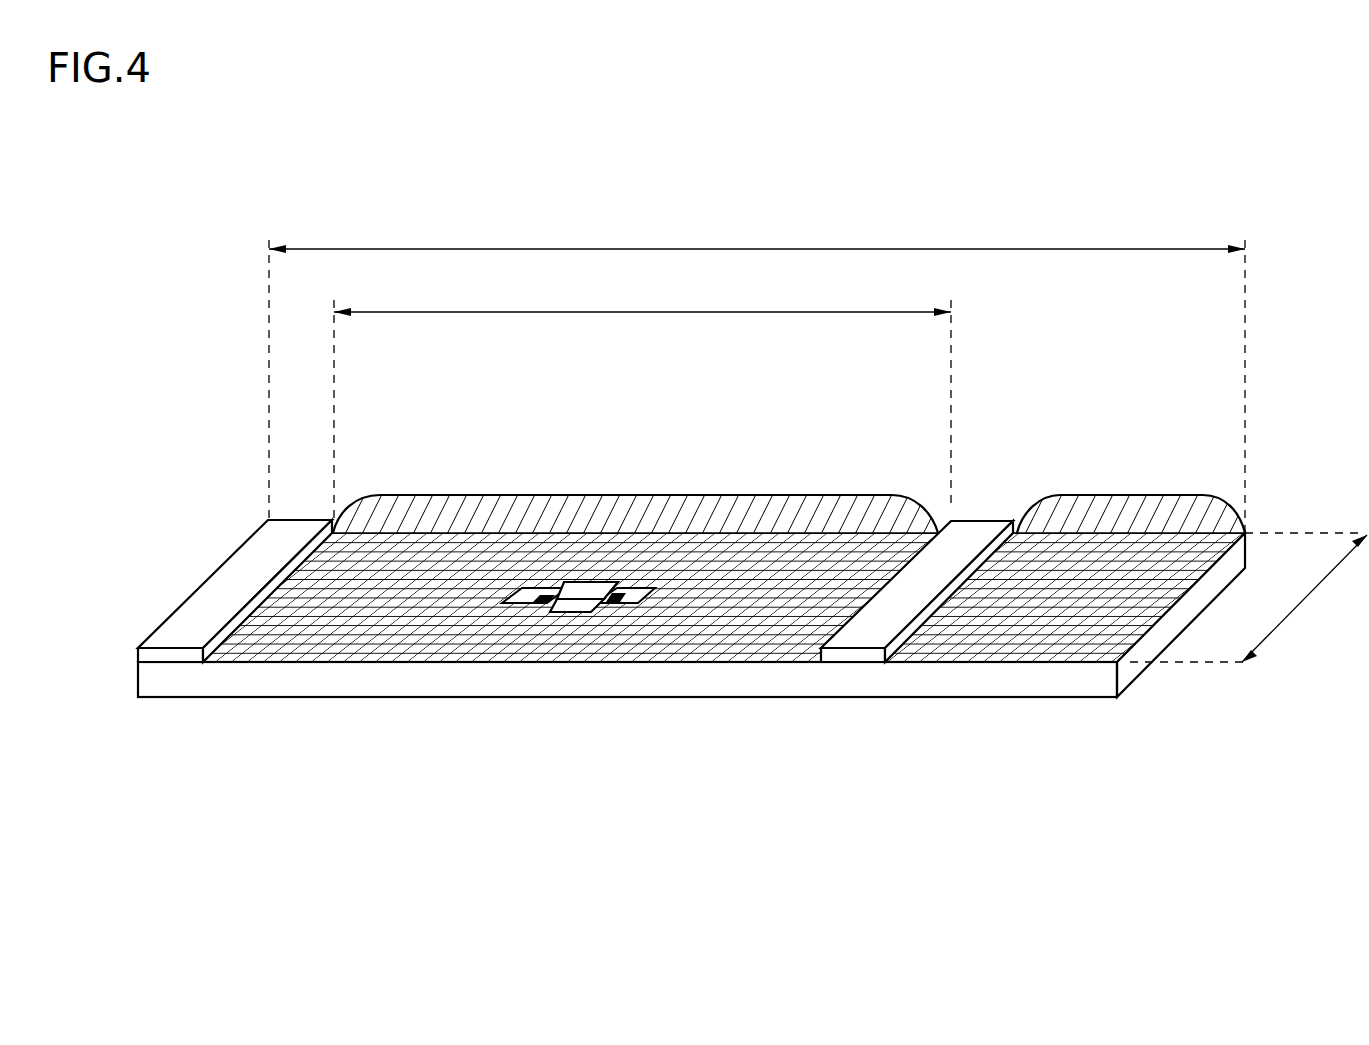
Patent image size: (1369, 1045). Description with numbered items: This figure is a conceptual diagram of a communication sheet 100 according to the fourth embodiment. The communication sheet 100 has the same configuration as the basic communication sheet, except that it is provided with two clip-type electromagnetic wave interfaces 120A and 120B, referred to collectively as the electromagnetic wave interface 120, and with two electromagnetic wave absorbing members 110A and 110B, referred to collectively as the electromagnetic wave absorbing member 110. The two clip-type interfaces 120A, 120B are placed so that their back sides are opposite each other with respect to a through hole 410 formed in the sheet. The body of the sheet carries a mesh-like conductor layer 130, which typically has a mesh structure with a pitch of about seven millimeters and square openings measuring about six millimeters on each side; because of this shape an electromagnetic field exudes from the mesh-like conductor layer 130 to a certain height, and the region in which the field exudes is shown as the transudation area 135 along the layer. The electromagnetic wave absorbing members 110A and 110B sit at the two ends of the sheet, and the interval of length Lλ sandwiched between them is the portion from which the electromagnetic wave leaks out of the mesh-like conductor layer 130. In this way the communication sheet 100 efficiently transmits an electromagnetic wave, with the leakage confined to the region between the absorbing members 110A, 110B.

The communication sheet 100 is at (989, 758).
The electromagnetic wave absorbing member 110 is at (234, 828).
The electromagnetic wave absorbing member 110A is at (172, 650).
The electromagnetic wave absorbing member 110B is at (853, 650).
The electromagnetic wave interface 120 is at (453, 447).
The clip-type electromagnetic wave interface 120A is at (534, 590).
The clip-type electromagnetic wave interface 120B is at (641, 588).
The mesh-like conductor layer 130 is at (1148, 530).
The transudation area 135 is at (845, 512).
The through hole 410 is at (564, 613).